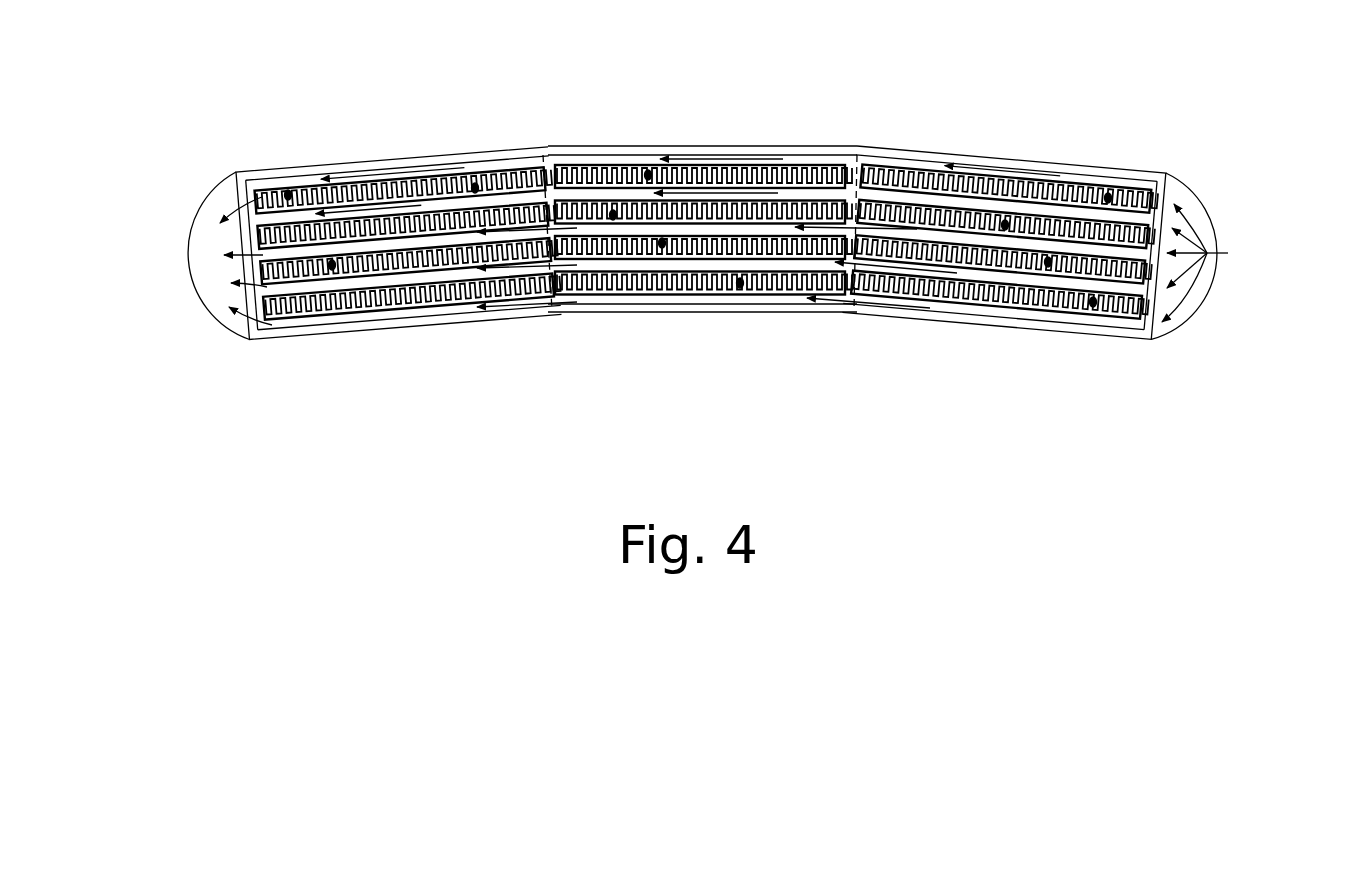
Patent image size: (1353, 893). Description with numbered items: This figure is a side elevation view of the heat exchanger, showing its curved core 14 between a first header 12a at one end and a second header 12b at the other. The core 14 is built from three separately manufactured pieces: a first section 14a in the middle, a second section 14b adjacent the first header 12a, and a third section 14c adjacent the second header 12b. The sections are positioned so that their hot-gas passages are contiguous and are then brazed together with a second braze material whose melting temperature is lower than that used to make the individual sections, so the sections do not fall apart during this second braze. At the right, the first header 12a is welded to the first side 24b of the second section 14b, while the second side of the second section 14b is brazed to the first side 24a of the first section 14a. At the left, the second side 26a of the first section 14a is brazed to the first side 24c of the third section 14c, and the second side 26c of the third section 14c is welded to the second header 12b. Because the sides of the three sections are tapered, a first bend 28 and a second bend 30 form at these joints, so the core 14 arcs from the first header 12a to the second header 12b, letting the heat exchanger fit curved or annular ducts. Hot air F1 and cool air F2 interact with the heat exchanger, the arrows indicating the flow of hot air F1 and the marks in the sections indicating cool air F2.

The core 14 is at (1148, 405).
The first section 14a is at (783, 147).
The second section 14b is at (984, 146).
The third section 14c is at (346, 160).
The first header 12a is at (1196, 212).
The second header 12b is at (203, 238).
The first side 24a is at (858, 172).
The first side 24b is at (880, 160).
The first side 24c is at (542, 168).
The second side 26a is at (550, 170).
The second side 26c is at (253, 190).
The first bend 28 is at (848, 318).
The second bend 30 is at (549, 320).
The hot air F1 is at (380, 212).
The cool air F2 is at (288, 192).